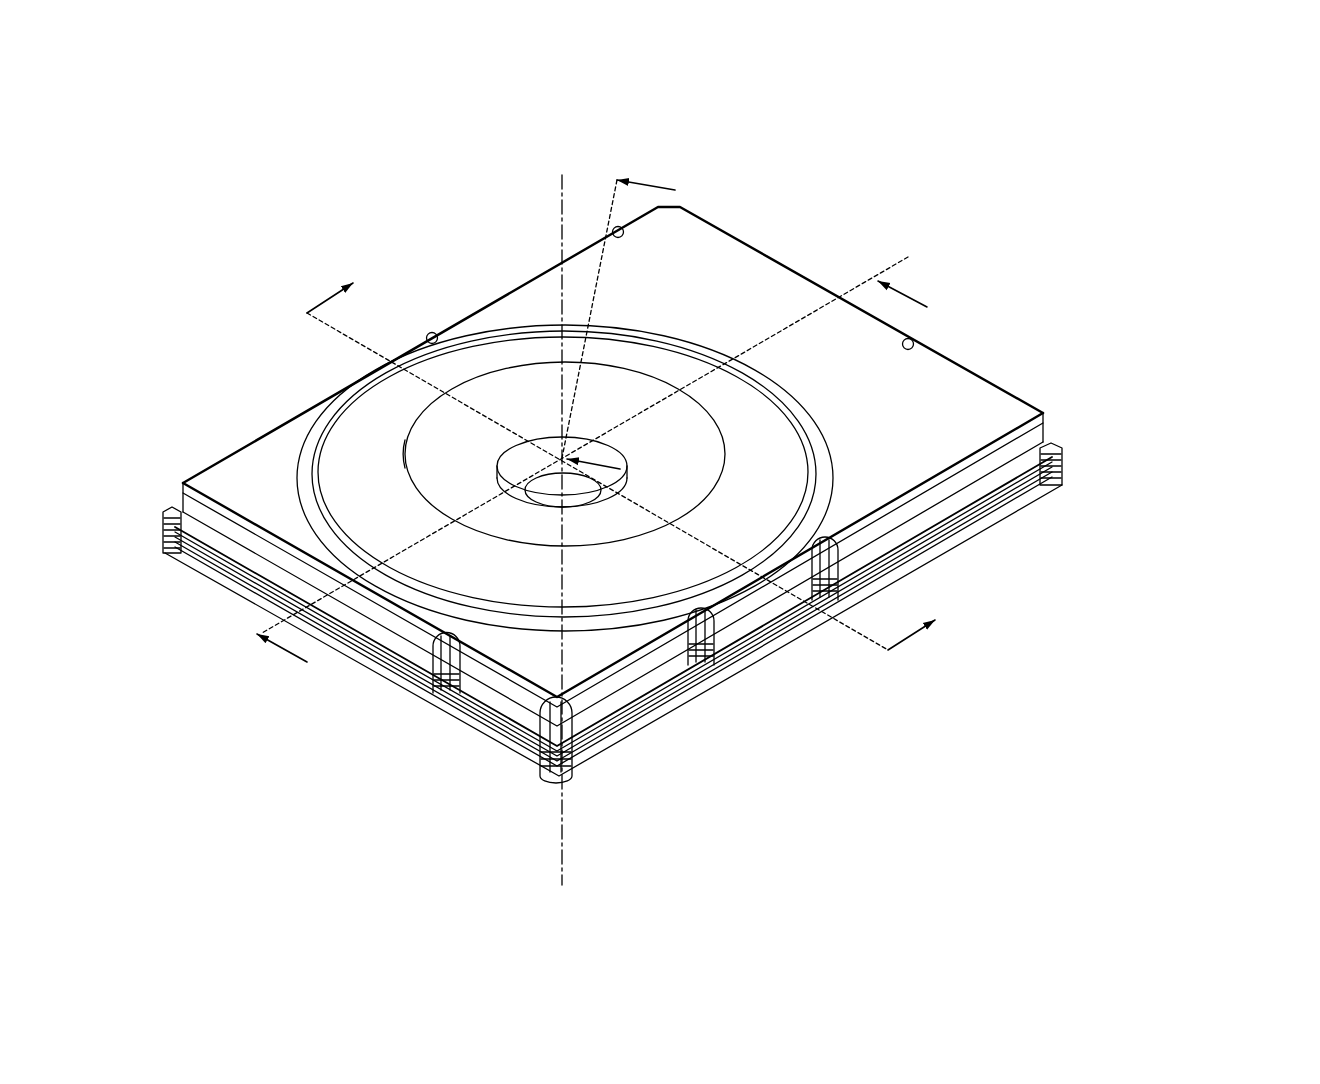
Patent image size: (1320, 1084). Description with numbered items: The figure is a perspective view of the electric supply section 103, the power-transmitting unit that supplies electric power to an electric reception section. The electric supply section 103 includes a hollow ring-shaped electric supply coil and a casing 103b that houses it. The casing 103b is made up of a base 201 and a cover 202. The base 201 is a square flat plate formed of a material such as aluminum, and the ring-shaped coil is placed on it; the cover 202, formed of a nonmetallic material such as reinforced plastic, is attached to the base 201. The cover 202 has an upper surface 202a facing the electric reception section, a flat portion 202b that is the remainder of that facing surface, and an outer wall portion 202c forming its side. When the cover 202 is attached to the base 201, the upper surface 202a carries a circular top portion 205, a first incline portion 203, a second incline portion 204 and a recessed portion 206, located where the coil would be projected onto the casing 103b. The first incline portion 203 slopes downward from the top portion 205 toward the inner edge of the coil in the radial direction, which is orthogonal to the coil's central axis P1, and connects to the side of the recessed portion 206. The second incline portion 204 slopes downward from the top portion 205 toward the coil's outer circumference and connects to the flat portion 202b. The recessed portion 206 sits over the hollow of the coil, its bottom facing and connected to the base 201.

The electric supply section 103 is at (463, 155).
The casing 103b is at (1182, 452).
The base 201 is at (1038, 502).
The cover 202 is at (1046, 413).
The upper surface 202a is at (776, 418).
The flat portion 202b is at (660, 305).
The outer wall portion 202c is at (725, 612).
The first incline portion 203 is at (455, 418).
The second incline portion 204 is at (345, 458).
The top portion 205 is at (413, 487).
The recessed portion 206 is at (507, 463).
The central axis P1 is at (568, 855).